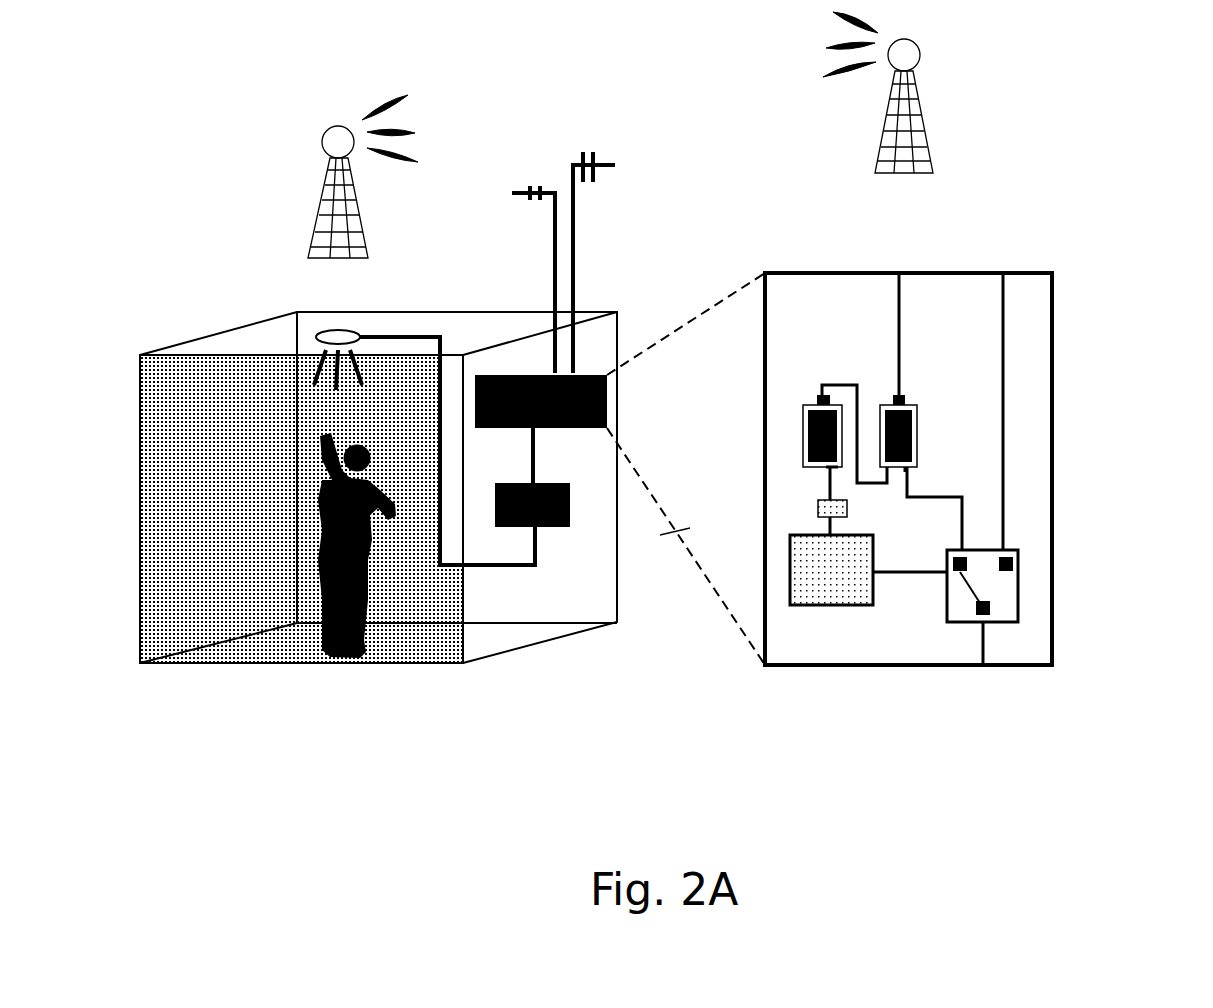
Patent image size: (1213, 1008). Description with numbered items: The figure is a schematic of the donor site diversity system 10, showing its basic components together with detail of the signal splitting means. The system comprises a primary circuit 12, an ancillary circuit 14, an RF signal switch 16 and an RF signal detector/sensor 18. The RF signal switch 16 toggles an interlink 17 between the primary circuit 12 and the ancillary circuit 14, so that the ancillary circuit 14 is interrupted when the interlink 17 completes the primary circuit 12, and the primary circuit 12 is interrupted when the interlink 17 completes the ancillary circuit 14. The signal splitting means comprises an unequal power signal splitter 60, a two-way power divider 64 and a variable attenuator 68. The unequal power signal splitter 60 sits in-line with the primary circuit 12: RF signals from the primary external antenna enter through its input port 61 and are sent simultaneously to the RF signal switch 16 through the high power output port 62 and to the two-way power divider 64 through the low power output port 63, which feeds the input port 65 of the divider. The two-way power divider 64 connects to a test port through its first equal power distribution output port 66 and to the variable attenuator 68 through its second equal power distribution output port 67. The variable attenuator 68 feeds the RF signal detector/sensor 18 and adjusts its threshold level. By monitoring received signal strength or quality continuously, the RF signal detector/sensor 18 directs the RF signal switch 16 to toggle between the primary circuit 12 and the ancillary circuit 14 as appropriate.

The donor site diversity system 10 is at (1055, 690).
The primary circuit 12 is at (930, 494).
The ancillary circuit 14 is at (1010, 382).
The RF signal switch 16 is at (1025, 553).
The interlink 17 is at (967, 590).
The RF signal detector/sensor 18 is at (833, 607).
The unequal power signal splitter 60 is at (878, 398).
The input port 61 is at (892, 392).
The high power output port 62 is at (907, 470).
The low power output port 63 is at (817, 510).
The two-way power divider 64 is at (803, 427).
The input port 65 is at (815, 398).
The first equal power distribution output port 66 is at (810, 472).
The second equal power distribution output port 67 is at (830, 472).
The variable attenuator 68 is at (660, 538).